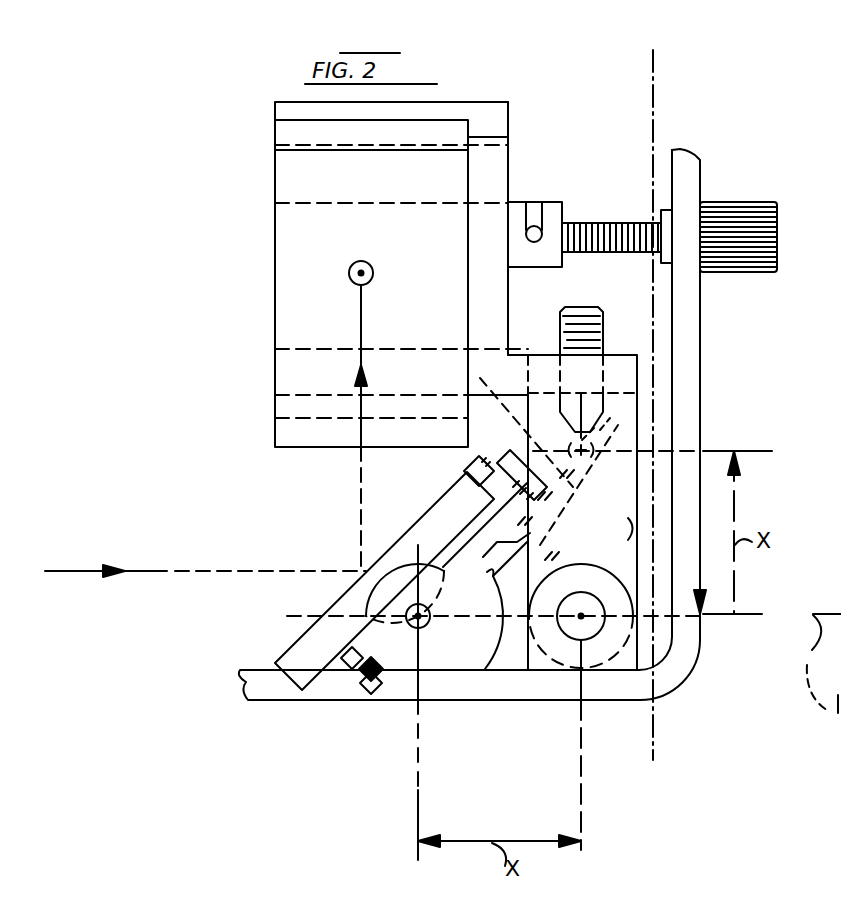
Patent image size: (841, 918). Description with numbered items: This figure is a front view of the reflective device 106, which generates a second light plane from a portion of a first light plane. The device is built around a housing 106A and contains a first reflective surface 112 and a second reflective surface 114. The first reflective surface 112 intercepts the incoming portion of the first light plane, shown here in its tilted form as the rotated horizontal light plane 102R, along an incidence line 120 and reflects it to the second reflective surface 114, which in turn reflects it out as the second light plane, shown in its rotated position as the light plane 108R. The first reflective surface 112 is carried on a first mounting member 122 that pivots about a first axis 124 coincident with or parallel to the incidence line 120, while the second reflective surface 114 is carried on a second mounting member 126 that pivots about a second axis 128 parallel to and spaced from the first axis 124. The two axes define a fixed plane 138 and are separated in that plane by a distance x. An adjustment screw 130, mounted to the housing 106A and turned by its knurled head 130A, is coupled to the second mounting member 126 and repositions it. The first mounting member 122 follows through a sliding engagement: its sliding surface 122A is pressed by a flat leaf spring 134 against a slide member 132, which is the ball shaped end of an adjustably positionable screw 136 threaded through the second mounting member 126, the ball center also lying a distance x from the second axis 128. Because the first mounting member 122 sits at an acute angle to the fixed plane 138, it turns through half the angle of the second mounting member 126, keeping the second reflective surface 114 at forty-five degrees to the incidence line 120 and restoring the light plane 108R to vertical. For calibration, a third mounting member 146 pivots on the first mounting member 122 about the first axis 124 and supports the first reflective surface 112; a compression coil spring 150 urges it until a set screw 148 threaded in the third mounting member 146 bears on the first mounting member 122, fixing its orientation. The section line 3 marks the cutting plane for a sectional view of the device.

The section line 3- 3 is at (578, 65).
The rotated horizontal light plane 102R is at (80, 573).
The reflective device 106 is at (258, 272).
The housing 106A is at (700, 324).
The rotated light plane 108R is at (368, 263).
The first reflective surface 112 is at (293, 648).
The second reflective surface 114 is at (275, 315).
The incidence line 120 is at (358, 567).
The first mounting member 122 is at (510, 640).
The sliding surface 122A is at (480, 378).
The first axis 124 is at (418, 604).
The second mounting member 126 is at (630, 548).
The second axis 128 is at (583, 614).
The adjustment screw 130 is at (598, 223).
The knurled head 130A is at (740, 203).
The slide member 132 is at (712, 376).
The flat leaf spring 134 is at (575, 489).
The adjustably positionable screw 136 is at (640, 277).
The fixed plane 138 is at (300, 614).
The third mounting member 146 is at (485, 500).
The set screw 148 is at (492, 460).
The compression coil spring 150 is at (357, 670).